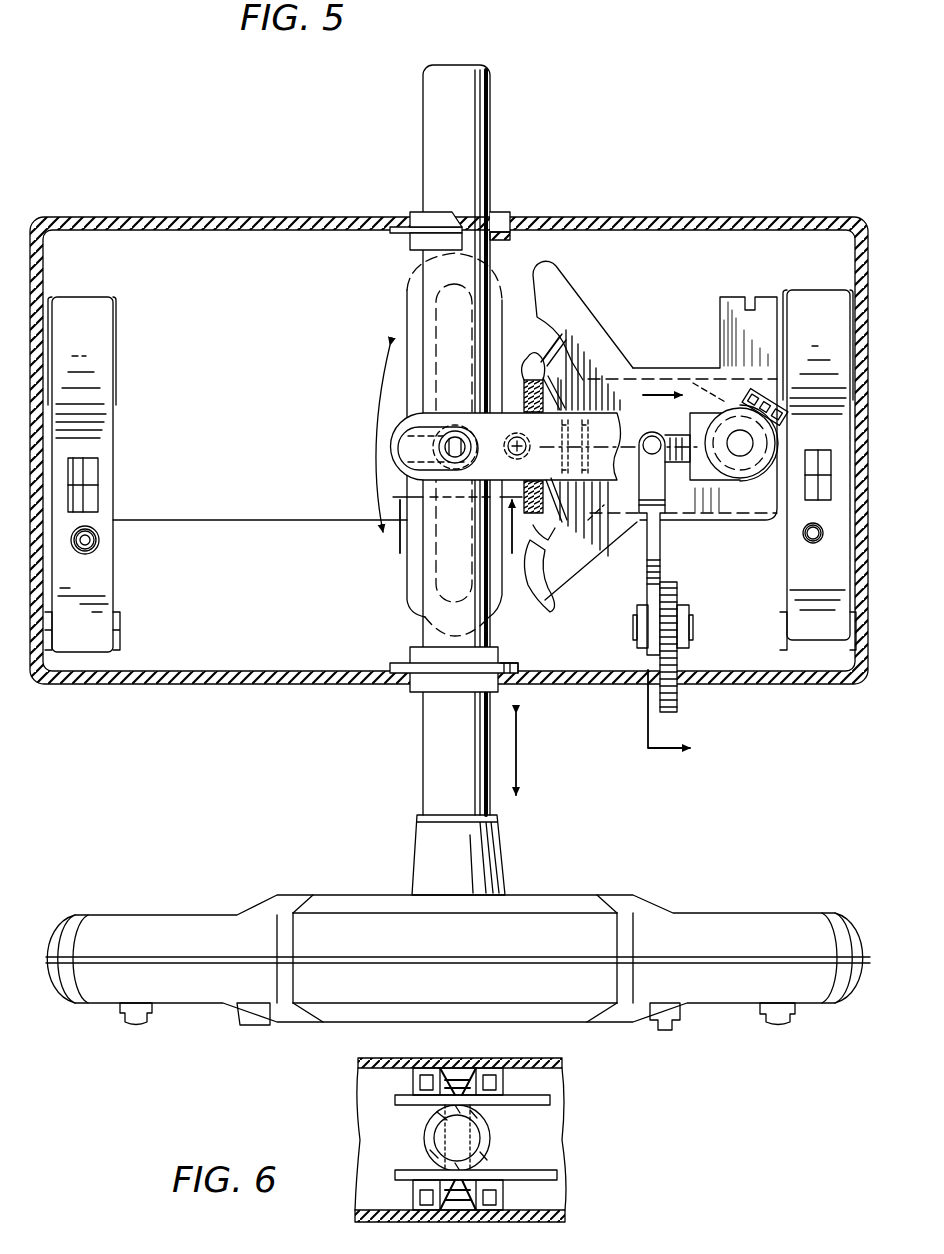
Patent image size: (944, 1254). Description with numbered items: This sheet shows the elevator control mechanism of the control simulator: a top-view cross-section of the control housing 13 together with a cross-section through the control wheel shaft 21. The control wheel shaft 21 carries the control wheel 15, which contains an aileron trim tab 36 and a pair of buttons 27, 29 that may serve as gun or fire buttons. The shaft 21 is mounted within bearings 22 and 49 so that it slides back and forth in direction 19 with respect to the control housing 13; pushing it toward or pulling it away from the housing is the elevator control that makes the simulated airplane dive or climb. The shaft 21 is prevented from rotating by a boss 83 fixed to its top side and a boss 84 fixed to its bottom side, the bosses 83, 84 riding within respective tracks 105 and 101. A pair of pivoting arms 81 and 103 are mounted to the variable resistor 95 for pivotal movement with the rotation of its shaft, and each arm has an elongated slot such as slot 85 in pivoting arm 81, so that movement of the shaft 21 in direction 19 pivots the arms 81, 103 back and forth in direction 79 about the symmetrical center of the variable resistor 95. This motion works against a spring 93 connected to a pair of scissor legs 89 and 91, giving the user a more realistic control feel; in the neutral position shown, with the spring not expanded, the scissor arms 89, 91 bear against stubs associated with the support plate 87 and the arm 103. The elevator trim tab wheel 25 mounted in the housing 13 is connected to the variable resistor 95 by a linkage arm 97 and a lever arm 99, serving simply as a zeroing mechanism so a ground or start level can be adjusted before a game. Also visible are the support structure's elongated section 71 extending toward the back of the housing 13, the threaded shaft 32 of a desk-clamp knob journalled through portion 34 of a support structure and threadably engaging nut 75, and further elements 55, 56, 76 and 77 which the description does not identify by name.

In FIG. 5, the control housing 13 is at (612, 217).
In FIG. 5, the control wheel 15 is at (740, 905).
In FIG. 5, the direction of lateral movement 19 is at (520, 748).
In FIG. 5, the control wheel shaft 21 is at (490, 166).
In FIG. 6, the control wheel shaft 21 is at (492, 1146).
In FIG. 5, the bearings 22 is at (410, 657).
In FIG. 5, the elevator trim tab wheel 25 is at (678, 702).
In FIG. 5, the button 27 is at (138, 1026).
In FIG. 5, the button 29 is at (778, 1026).
In FIG. 5, the threaded shaft 32 is at (808, 542).
In FIG. 5, the portion of support structure 34 is at (92, 546).
In FIG. 5, the aileron trim tab 36 is at (664, 1030).
In FIG. 5, the bearing 49 is at (412, 218).
In FIG. 5, the column stem 55 is at (500, 850).
In FIG. 5, the bar 56 is at (285, 519).
In FIG. 5, the elongated section 71 is at (812, 306).
In FIG. 5, the nut 75 is at (803, 536).
In FIG. 5, the left pivot pin 76 is at (99, 540).
In FIG. 5, the left latch block 77 is at (113, 432).
In FIG. 5, the direction of arm movement 79 is at (378, 400).
In FIG. 5, the pivoting arm 81 is at (472, 412).
In FIG. 6, the pivoting arm 81 is at (545, 1097).
In FIG. 5, the boss 83 is at (443, 454).
In FIG. 6, the boss 83 is at (460, 1070).
In FIG. 6, the boss 84 is at (500, 1198).
In FIG. 5, the elongated slot 85 is at (420, 438).
In FIG. 5, the support plate 87 is at (600, 372).
In FIG. 5, the scissor leg 89 is at (537, 372).
In FIG. 5, the scissor leg 91 is at (528, 576).
In FIG. 5, the spring 93 is at (578, 348).
In FIG. 5, the variable resistor 95 is at (736, 478).
In FIG. 5, the linkage arm 97 is at (650, 550).
In FIG. 5, the lever arm 99 is at (652, 434).
In FIG. 5, the track 101 is at (407, 292).
In FIG. 6, the track 101 is at (558, 1185).
In FIG. 6, the pivoting arm 103 is at (535, 1172).
In FIG. 5, the track 105 is at (412, 1090).